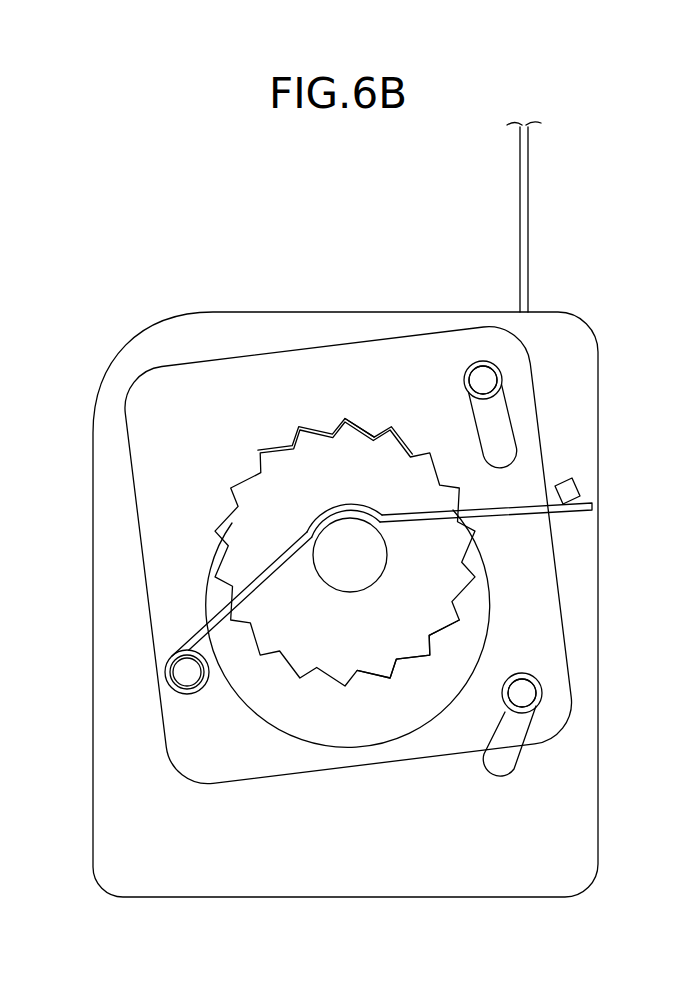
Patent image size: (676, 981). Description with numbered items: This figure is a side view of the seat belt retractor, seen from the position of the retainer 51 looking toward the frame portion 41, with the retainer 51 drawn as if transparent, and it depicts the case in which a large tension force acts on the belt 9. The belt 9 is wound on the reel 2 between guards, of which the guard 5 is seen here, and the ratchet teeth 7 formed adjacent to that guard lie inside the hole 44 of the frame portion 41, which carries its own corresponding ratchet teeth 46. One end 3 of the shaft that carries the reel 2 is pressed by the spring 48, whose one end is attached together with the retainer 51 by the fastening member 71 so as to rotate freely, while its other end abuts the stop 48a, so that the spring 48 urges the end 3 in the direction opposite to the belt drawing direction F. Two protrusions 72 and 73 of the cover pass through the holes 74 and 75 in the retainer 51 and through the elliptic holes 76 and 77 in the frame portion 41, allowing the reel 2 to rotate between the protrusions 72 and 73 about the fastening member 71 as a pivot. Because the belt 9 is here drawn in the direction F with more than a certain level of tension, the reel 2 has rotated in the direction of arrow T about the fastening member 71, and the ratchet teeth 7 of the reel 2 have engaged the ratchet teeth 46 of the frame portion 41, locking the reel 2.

The reel 2 is at (300, 664).
The one end of the shaft 3 is at (382, 553).
The guard 5 is at (406, 640).
The ratchet teeth 7 is at (400, 451).
The belt 9 is at (529, 238).
The frame portion 41 is at (112, 495).
The hole 44 is at (480, 628).
The ratchet teeth 46 is at (270, 442).
The spring 48 is at (188, 638).
The stop 48a is at (582, 490).
The retainer 51 is at (252, 765).
The fastening member 71 is at (164, 696).
The protrusion 72 is at (487, 377).
The protrusion 73 is at (530, 690).
The hole 74 is at (500, 387).
The hole 75 is at (540, 698).
The elliptic hole 76 is at (500, 437).
The elliptic hole 77 is at (500, 765).
The direction of rotation T is at (366, 596).
The belt drawing direction F is at (555, 200).